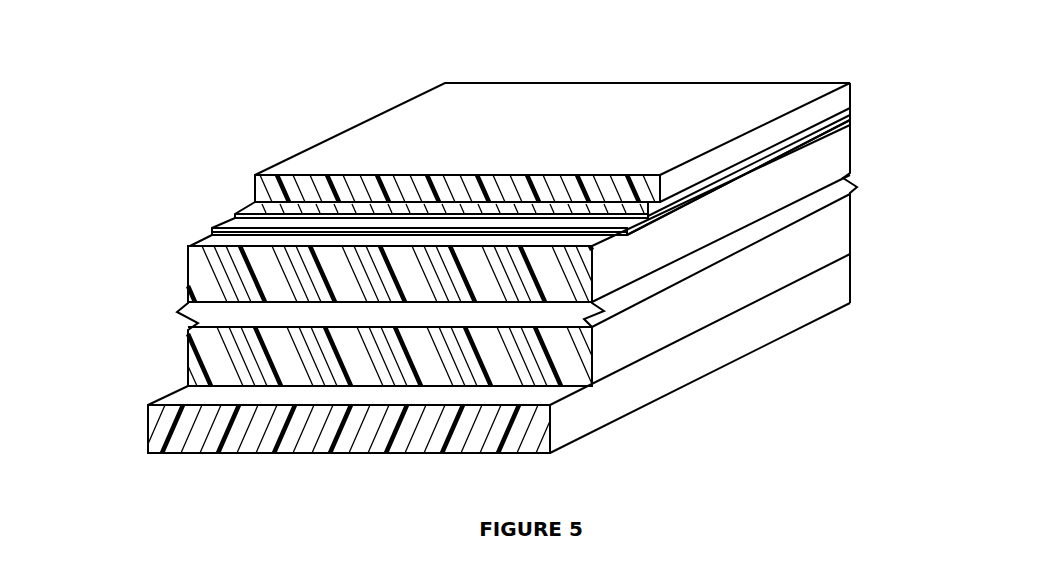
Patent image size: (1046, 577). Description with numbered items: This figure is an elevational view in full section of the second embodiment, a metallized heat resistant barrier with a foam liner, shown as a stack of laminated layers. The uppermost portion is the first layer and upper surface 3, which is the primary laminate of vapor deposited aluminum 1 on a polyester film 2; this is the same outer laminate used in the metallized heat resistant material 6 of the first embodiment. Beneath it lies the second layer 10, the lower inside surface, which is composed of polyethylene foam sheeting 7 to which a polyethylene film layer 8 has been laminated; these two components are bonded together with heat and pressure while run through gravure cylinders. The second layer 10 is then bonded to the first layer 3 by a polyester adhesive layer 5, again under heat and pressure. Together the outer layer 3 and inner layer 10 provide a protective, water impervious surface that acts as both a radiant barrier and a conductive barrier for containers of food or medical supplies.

The vapor deposited aluminum 1 is at (820, 133).
The polyester film 2 is at (812, 113).
The first layer and upper surface 3 is at (235, 177).
The polyester adhesive layer 5 is at (778, 160).
The metallized heat resistant material 6 is at (103, 178).
The polyethylene foam sheeting 7 is at (735, 223).
The polyethylene film layer 8 is at (778, 321).
The second layer 10 is at (182, 250).